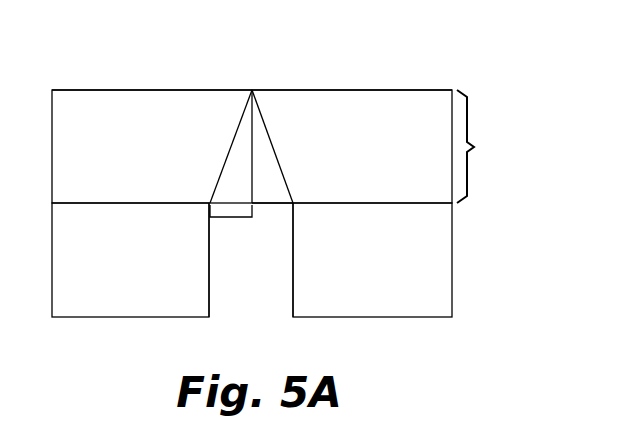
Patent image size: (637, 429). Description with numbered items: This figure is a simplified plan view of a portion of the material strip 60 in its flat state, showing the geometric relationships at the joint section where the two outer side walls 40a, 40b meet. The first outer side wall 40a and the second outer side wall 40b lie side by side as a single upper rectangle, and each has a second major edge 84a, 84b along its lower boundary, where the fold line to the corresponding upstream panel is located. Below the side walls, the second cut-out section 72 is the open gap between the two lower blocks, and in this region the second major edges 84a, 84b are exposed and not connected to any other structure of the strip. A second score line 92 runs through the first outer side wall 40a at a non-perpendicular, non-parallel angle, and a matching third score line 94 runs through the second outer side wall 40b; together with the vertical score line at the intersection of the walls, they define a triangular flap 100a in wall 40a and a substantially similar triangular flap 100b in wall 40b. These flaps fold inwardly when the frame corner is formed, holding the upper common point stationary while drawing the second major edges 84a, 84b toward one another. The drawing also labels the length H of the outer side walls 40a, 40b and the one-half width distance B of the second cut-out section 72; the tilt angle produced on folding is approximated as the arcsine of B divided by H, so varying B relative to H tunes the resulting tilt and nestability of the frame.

The material strip 60 is at (494, 53).
The first outer side wall 40a is at (105, 113).
The second outer side wall 40b is at (417, 114).
The second score line 92 is at (237, 132).
The third score line 94 is at (270, 133).
The triangular flap 100a is at (229, 182).
The triangular flap 100b is at (272, 178).
The second major edge 84a is at (134, 203).
The second major edge 84b is at (400, 203).
The second cut-out section 72 is at (266, 289).
The one-half width distance B is at (233, 220).
The length of the outer side walls H is at (476, 146).